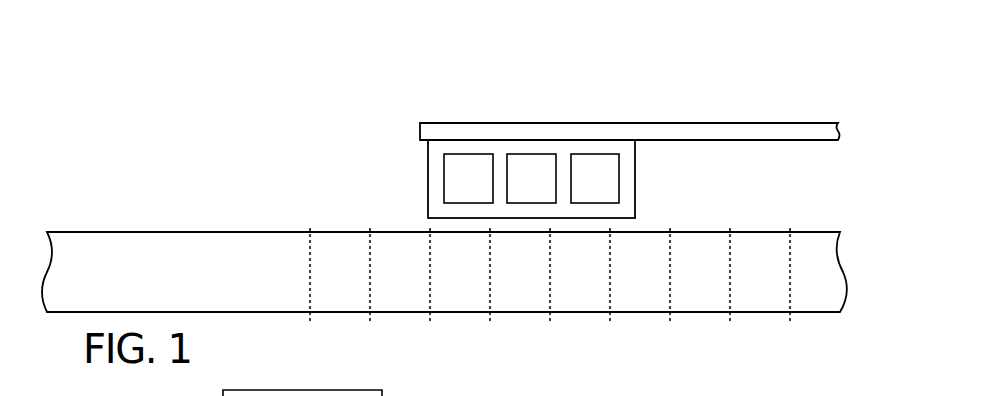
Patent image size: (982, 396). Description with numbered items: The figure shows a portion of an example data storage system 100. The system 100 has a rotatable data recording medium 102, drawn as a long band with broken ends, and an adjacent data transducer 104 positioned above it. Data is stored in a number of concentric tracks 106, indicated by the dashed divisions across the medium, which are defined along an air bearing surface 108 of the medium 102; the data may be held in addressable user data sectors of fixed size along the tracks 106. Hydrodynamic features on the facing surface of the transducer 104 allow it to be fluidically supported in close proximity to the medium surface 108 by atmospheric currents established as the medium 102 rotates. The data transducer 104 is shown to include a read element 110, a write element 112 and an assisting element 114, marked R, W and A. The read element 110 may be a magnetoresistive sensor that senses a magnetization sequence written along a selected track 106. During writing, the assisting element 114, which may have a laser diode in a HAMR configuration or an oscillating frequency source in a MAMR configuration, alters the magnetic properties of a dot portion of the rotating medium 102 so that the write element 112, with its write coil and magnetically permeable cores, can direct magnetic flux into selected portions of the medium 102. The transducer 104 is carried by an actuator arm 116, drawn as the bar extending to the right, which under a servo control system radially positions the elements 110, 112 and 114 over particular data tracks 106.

The data storage system 100 is at (161, 91).
The rotatable data recording medium 102 is at (103, 283).
The data transducer 104 is at (414, 126).
The concentric tracks 106 is at (530, 316).
The air bearing surface 108 is at (130, 232).
The read element 110 is at (468, 152).
The write element 112 is at (531, 152).
The assisting element 114 is at (594, 152).
The actuator arm 116 is at (722, 130).